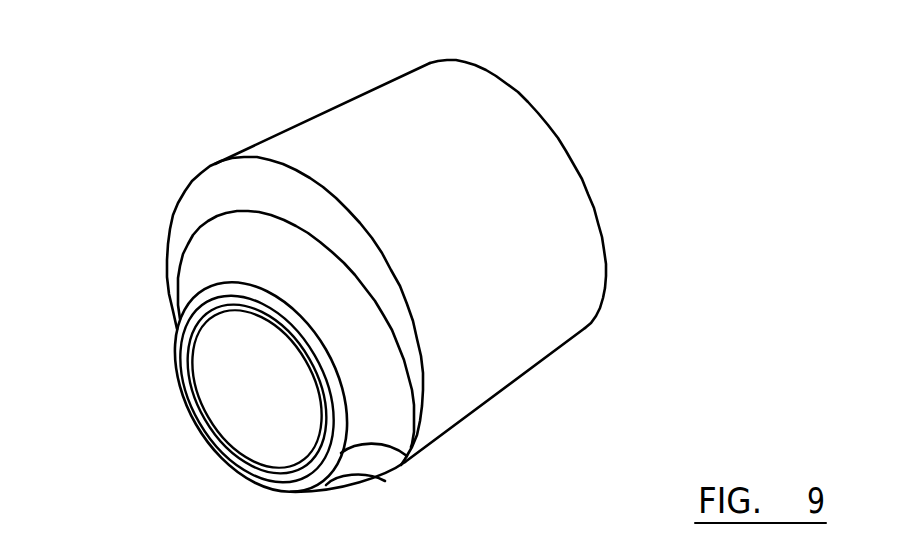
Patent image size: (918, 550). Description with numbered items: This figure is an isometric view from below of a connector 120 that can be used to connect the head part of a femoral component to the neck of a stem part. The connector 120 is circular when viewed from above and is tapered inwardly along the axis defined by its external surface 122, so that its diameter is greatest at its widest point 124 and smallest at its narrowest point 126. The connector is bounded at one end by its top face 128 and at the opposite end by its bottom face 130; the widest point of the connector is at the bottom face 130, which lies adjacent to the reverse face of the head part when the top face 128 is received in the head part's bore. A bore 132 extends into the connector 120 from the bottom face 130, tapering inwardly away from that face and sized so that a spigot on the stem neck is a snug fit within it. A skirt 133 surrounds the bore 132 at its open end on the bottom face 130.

The connector 120 is at (333, 105).
The external surface 122 is at (472, 222).
The widest point 124 is at (207, 163).
The narrowest point 126 is at (594, 320).
The top face 128 is at (567, 146).
The bottom face 130 is at (200, 202).
The bore 132 is at (277, 397).
The skirt 133 is at (380, 395).